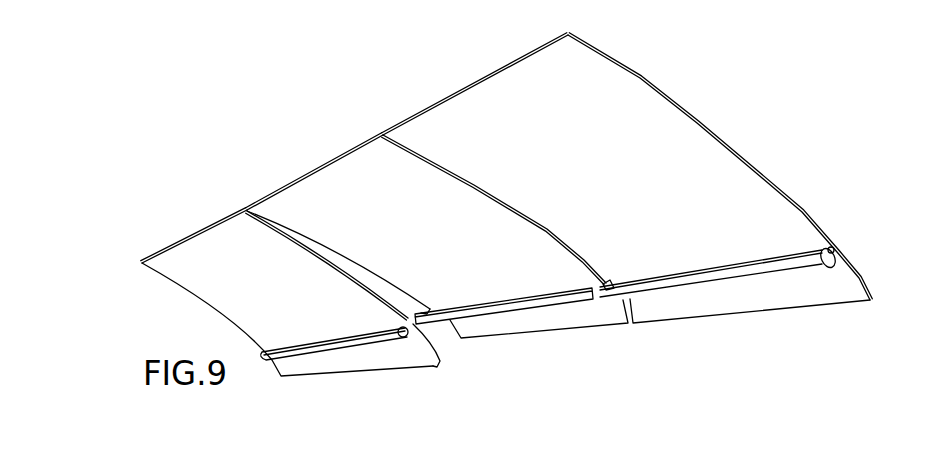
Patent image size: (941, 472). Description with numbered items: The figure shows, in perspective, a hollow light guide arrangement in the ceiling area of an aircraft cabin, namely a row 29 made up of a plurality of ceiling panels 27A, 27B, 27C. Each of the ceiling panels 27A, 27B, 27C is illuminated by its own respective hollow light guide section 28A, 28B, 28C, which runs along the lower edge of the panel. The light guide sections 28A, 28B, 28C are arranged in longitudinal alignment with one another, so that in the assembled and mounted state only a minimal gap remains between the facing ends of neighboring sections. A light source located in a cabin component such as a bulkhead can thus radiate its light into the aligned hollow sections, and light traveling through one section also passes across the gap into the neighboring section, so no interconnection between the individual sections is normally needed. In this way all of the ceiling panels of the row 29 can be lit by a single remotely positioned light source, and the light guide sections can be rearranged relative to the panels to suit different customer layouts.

The ceiling panel 27A is at (622, 183).
The ceiling panel 27B is at (428, 247).
The ceiling panel 27C is at (290, 312).
The hollow light guide section 28A is at (730, 287).
The hollow light guide section 28B is at (565, 302).
The hollow light guide section 28C is at (387, 340).
The row of ceiling panels 29 is at (849, 228).